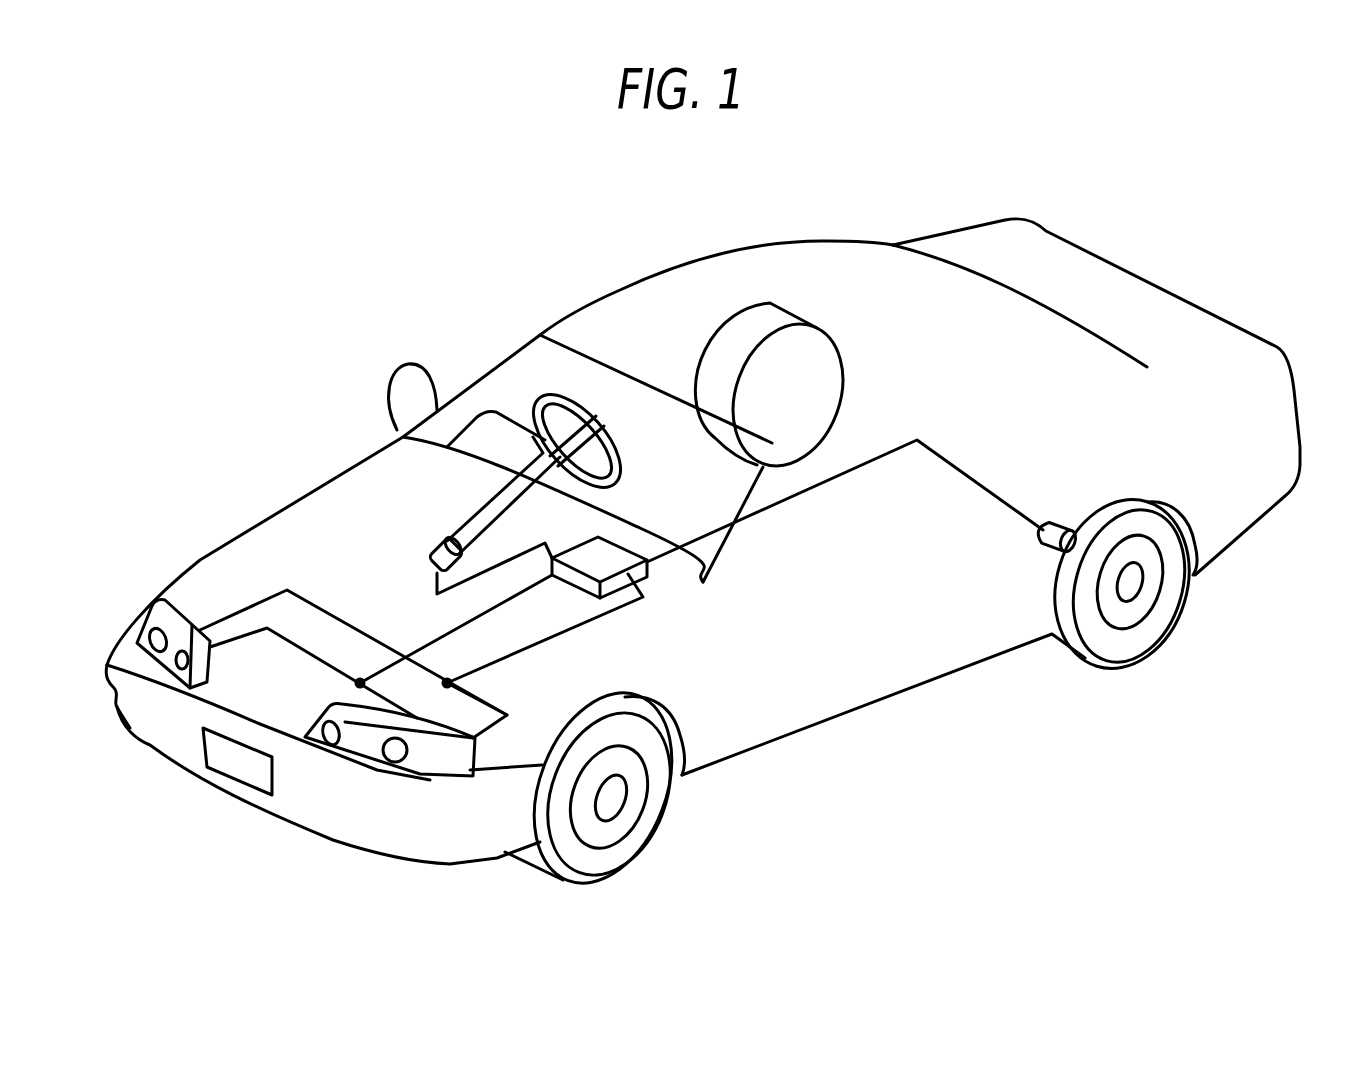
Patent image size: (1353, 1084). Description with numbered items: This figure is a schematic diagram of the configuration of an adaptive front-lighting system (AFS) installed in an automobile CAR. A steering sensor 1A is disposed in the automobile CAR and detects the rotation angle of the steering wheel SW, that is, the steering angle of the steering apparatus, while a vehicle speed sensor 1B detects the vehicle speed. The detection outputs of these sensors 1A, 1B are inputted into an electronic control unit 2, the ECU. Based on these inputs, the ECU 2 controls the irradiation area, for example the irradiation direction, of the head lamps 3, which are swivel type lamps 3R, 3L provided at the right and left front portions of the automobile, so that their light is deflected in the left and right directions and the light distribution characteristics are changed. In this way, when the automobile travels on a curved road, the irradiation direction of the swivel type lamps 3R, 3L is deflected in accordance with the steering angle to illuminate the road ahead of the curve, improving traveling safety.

The automobile CAR is at (1072, 240).
The steering wheel SW is at (577, 410).
The steering sensor 1A is at (432, 554).
The vehicle speed sensor 1B is at (1043, 546).
The electronic control unit (ECU) 2 is at (650, 585).
The head lamps 3 is at (283, 843).
The swivel type lamp 3L is at (430, 762).
The swivel type lamp 3R is at (178, 623).